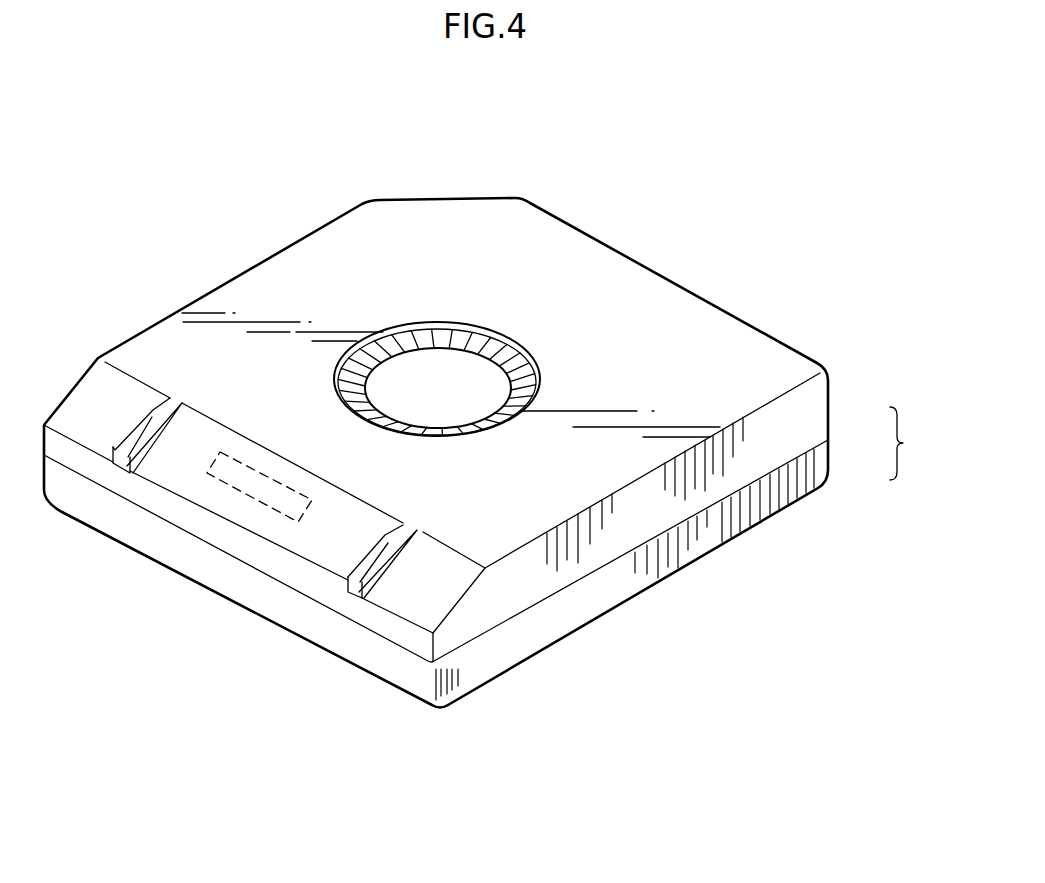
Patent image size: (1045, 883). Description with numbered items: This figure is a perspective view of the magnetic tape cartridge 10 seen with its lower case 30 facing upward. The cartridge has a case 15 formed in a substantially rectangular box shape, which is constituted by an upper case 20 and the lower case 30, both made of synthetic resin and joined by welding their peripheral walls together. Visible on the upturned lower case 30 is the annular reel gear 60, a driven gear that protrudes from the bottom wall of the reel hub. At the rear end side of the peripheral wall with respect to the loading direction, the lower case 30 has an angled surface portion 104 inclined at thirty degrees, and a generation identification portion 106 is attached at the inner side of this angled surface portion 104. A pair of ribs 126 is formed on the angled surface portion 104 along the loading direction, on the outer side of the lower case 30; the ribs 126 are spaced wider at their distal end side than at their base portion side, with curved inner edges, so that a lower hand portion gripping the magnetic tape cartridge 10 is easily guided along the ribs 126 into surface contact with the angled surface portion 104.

The magnetic tape cartridge 10 is at (667, 247).
The case 15 is at (918, 443).
The upper case 20 is at (814, 466).
The lower case 30 is at (812, 421).
The reel gear 60 is at (533, 362).
The angled surface portion 104 is at (433, 556).
The generation identification portion 106 is at (257, 480).
The ribs 126 is at (137, 428).